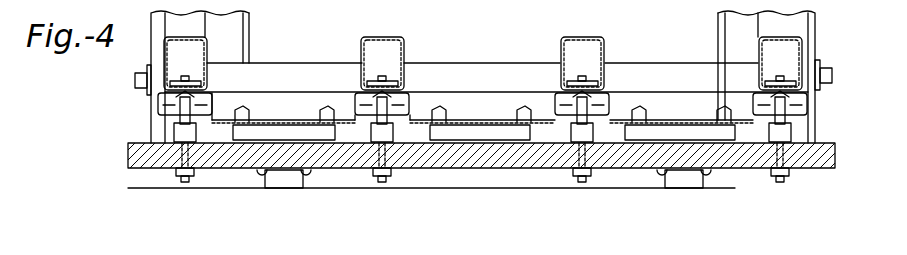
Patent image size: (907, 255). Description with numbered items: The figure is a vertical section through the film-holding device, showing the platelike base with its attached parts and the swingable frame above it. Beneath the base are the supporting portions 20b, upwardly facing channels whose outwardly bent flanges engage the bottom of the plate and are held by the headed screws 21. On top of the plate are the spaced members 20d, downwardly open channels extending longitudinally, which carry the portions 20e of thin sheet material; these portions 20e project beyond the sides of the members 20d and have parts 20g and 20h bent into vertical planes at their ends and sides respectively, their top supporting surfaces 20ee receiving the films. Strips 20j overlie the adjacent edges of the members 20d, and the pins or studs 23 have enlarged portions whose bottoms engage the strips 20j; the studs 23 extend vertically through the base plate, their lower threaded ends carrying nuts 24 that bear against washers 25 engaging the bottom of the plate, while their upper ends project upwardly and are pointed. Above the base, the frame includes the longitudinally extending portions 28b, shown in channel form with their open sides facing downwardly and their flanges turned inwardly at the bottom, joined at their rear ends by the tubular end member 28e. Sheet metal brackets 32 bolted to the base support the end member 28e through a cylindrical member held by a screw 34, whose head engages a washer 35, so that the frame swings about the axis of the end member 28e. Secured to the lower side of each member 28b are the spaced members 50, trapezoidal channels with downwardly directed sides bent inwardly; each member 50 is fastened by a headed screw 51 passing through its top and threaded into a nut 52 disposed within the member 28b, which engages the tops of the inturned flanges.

The supporting portions 20b is at (305, 186).
The spaced members 20d is at (484, 134).
The portions 20e is at (462, 120).
The top supporting surfaces 20ee is at (278, 96).
The parts 20g is at (241, 110).
The parts 20h is at (408, 115).
The strips 20j is at (172, 136).
The headed screws 21 is at (264, 176).
The pins or studs 23 is at (808, 100).
The nuts 24 is at (178, 178).
The washers 25 is at (178, 170).
The longitudinally extending portions 28b is at (207, 42).
The end member 28e is at (684, 62).
The brackets 32 is at (249, 22).
The screw 34 is at (135, 80).
The washer 35 is at (820, 62).
The spaced members 50 is at (160, 106).
The headed screw 51 is at (183, 78).
The nut 52 is at (396, 85).